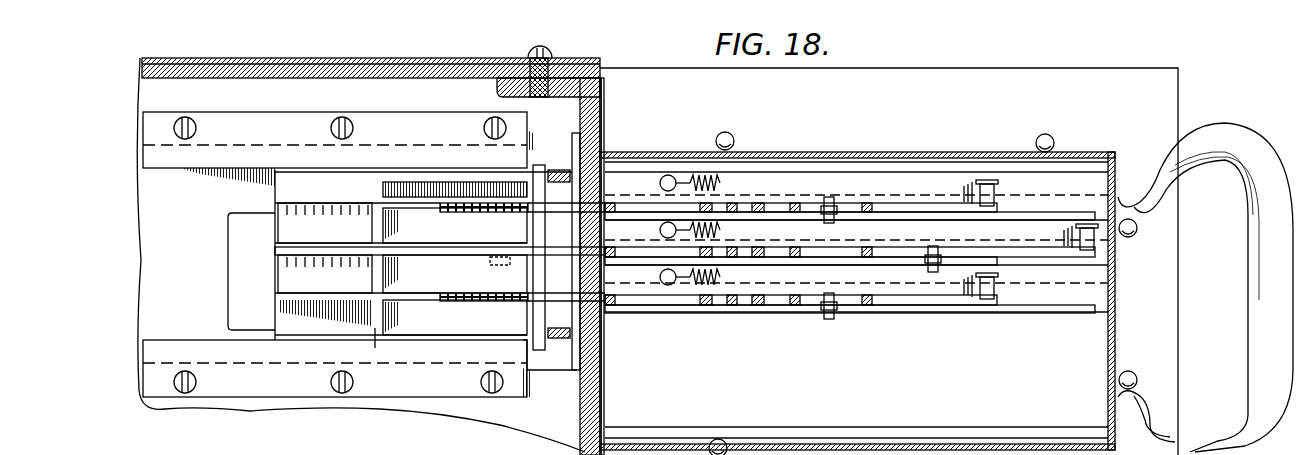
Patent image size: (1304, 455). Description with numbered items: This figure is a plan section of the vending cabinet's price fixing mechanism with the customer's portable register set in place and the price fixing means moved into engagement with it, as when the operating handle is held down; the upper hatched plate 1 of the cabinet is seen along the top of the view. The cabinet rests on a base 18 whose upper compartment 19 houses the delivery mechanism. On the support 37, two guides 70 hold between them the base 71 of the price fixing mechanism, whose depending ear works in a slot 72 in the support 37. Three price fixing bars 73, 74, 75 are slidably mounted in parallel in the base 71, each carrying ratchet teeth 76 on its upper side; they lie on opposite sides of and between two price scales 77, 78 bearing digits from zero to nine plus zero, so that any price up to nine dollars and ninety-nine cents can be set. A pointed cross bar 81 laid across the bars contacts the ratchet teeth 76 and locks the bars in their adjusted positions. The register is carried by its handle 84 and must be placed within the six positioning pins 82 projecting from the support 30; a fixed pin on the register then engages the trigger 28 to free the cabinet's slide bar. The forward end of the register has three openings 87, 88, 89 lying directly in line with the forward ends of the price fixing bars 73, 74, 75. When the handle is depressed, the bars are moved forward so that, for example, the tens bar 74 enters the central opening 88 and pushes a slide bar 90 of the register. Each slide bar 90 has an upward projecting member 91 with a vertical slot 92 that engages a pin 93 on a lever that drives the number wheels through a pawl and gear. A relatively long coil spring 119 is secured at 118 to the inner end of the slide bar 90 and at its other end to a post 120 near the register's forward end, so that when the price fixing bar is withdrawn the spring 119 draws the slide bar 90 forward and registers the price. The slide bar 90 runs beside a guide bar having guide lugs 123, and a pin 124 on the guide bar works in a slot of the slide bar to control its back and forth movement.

The top plate 1 is at (448, 60).
The base 18 is at (588, 404).
The upper compartment 19 is at (498, 417).
The trigger 28 is at (500, 262).
The support 30 is at (982, 78).
The support 37 is at (181, 410).
The guides 70 is at (372, 125).
The base of the price fixing mechanism 71 is at (448, 327).
The slot 72 is at (231, 299).
The price fixing bar 73 is at (418, 210).
The price fixing bar 74 is at (418, 255).
The price fixing bar 75 is at (418, 300).
The ratchet teeth 76 is at (484, 208).
The price scale 77 is at (278, 236).
The price scale 78 is at (278, 280).
The cross bar 81 is at (533, 280).
The positioning pins 82 is at (730, 134).
The handle 84 is at (1262, 300).
The opening 87 is at (580, 305).
The central opening 88 is at (609, 234).
The opening 89 is at (606, 182).
The slide bar 90 is at (990, 214).
The upward projecting member 91 is at (880, 203).
The vertical slot 92 is at (827, 205).
The pin 93 is at (832, 200).
The spring attachment 118 is at (987, 178).
The coil spring 119 is at (703, 175).
The post 120 is at (670, 175).
The guide lugs 123 is at (758, 307).
The pin 124 is at (736, 310).